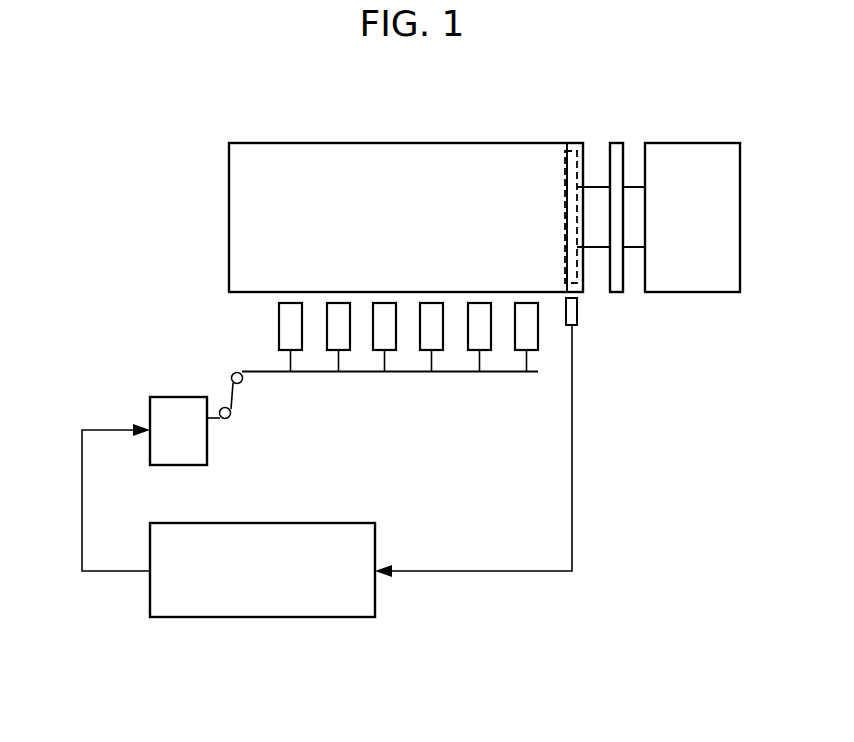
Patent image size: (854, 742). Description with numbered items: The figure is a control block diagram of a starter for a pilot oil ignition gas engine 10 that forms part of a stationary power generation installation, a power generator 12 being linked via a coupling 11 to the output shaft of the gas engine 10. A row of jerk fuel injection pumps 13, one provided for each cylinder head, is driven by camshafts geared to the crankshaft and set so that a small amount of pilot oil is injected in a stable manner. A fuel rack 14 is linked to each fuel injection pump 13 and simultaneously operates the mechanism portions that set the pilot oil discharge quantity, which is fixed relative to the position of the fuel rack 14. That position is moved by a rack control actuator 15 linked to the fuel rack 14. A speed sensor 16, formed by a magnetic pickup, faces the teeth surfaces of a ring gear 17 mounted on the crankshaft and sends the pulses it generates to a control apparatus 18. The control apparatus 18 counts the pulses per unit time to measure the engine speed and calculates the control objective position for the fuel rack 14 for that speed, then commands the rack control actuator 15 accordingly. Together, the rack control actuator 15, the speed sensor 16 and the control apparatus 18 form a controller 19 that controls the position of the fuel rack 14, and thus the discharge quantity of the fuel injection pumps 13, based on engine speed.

The pilot oil ignition gas engine 10 is at (440, 158).
The coupling 11 is at (617, 147).
The power generator 12 is at (693, 150).
The jerk fuel injection pump 13 is at (488, 333).
The fuel rack 14 is at (416, 372).
The rack control actuator 15 is at (180, 402).
The speed sensor 16 is at (577, 310).
The ring gear 17 is at (579, 268).
The control apparatus 18 is at (285, 617).
The controller 19 is at (126, 592).